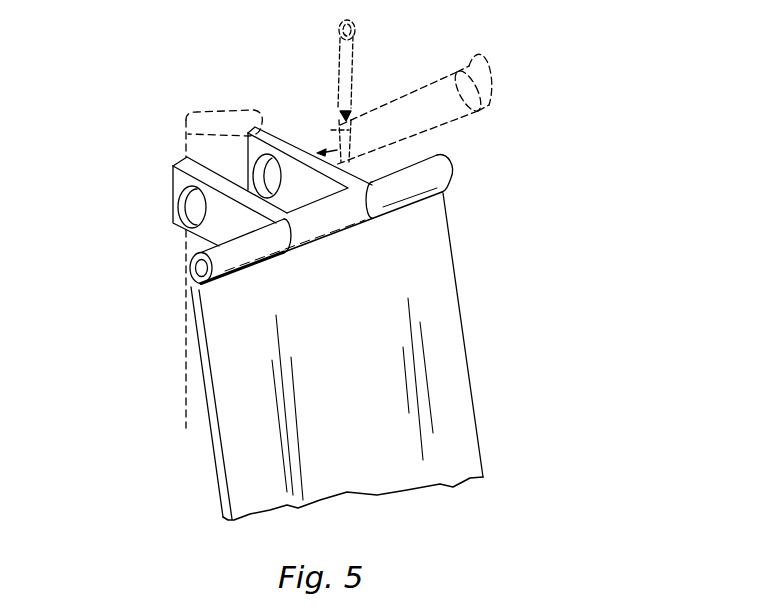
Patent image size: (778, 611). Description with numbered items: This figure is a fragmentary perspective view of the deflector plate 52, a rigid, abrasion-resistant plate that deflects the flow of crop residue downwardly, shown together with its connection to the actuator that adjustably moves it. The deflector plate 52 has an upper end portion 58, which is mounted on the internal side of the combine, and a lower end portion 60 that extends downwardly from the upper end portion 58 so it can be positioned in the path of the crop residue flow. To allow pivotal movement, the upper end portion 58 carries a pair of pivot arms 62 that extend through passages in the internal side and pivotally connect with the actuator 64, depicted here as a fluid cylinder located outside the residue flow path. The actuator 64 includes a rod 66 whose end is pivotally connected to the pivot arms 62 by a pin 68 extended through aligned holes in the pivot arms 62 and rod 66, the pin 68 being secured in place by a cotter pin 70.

The deflector plate 52 is at (403, 351).
The upper end portion 58 is at (361, 370).
The lower end portion 60 is at (453, 488).
The pivot arms 62 is at (265, 128).
The actuator 64 is at (162, 265).
The rod 66 is at (198, 115).
The pin 68 is at (488, 72).
The cotter pin 70 is at (350, 62).